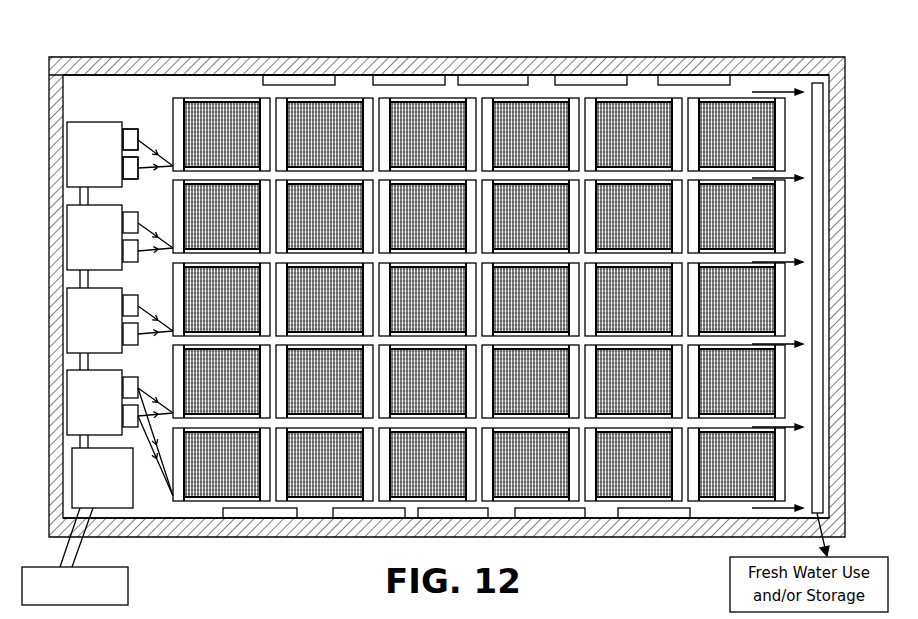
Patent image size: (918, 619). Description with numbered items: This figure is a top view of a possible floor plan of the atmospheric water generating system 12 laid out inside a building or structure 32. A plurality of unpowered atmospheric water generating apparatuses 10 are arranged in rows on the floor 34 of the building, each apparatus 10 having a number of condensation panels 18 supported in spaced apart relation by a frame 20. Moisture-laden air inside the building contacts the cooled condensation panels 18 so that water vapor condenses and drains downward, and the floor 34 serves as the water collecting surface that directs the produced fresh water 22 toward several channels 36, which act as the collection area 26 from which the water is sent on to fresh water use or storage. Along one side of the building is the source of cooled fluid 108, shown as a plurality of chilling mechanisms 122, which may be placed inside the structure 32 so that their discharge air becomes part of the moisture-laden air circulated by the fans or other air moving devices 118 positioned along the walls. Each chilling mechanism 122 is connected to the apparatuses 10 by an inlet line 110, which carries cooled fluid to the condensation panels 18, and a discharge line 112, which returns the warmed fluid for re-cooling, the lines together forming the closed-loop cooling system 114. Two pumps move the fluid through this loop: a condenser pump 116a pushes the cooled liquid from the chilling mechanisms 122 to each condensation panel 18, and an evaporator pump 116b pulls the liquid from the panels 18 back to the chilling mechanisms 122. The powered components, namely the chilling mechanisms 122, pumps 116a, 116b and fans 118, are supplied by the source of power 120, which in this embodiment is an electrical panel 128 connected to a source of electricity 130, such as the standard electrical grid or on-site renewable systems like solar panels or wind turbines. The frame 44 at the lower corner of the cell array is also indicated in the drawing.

The atmospheric water generating apparatus 10 is at (476, 298).
The atmospheric water generating system 12 is at (447, 297).
The condensation panel 18 is at (555, 103).
The frame 20 is at (651, 92).
The produced fresh water 22 is at (763, 92).
The collection area 26 is at (826, 259).
The building or structure 32 is at (318, 70).
The floor 34 is at (707, 514).
The channel 36 is at (815, 405).
The cell frame 44 is at (592, 488).
The source of cooled fluid 108 is at (70, 285).
The inlet line 110 is at (143, 337).
The discharge line 112 is at (144, 314).
The closed-loop cooling system 114 is at (157, 128).
The condenser pump 116a is at (137, 174).
The evaporator pump 116b is at (125, 130).
The air moving device 118 is at (415, 80).
The source of power 120 is at (112, 556).
The chilling mechanism 122 is at (73, 390).
The electrical panel 128 is at (102, 478).
The source of electricity 130 is at (75, 586).